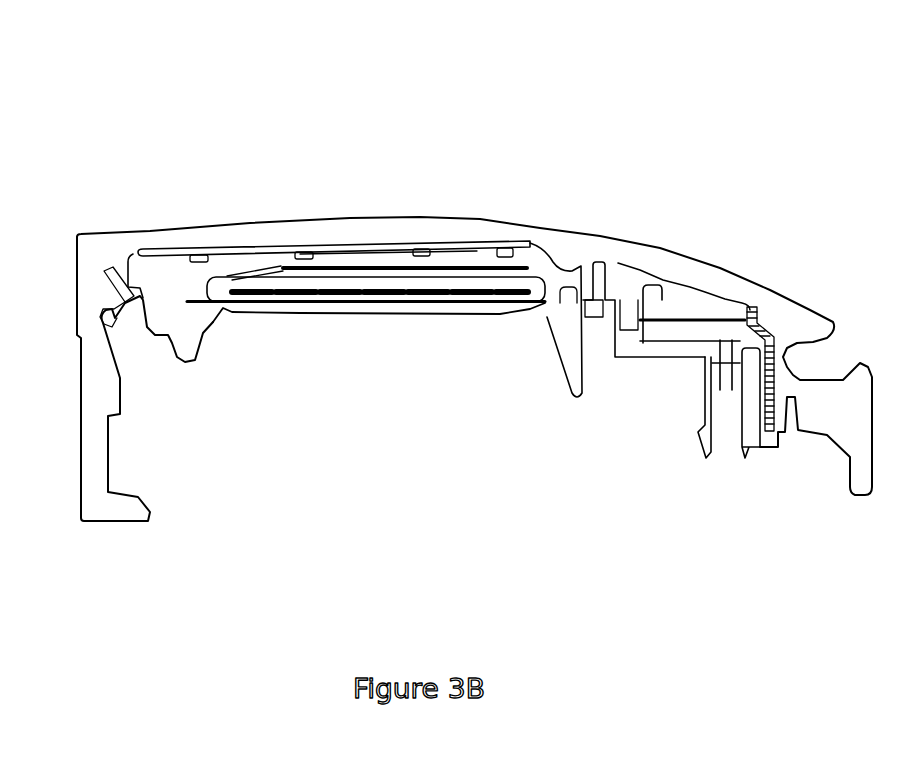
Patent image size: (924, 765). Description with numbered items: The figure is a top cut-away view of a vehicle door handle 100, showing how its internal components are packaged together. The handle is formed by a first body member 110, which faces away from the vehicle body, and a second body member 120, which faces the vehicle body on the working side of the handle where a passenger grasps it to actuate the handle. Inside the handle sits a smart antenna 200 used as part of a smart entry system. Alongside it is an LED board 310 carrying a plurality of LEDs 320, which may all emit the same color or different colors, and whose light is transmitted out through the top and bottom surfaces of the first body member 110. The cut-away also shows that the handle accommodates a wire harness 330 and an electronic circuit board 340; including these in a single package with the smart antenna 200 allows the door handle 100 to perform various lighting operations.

The door handle 100 is at (474, 280).
The first body member 110 is at (603, 237).
The second body member 120 is at (298, 313).
The smart antenna 200 is at (387, 310).
The LED board 310 is at (148, 250).
The LEDs 320 is at (483, 248).
The wire harness 330 is at (640, 290).
The electronic circuit board 340 is at (697, 320).